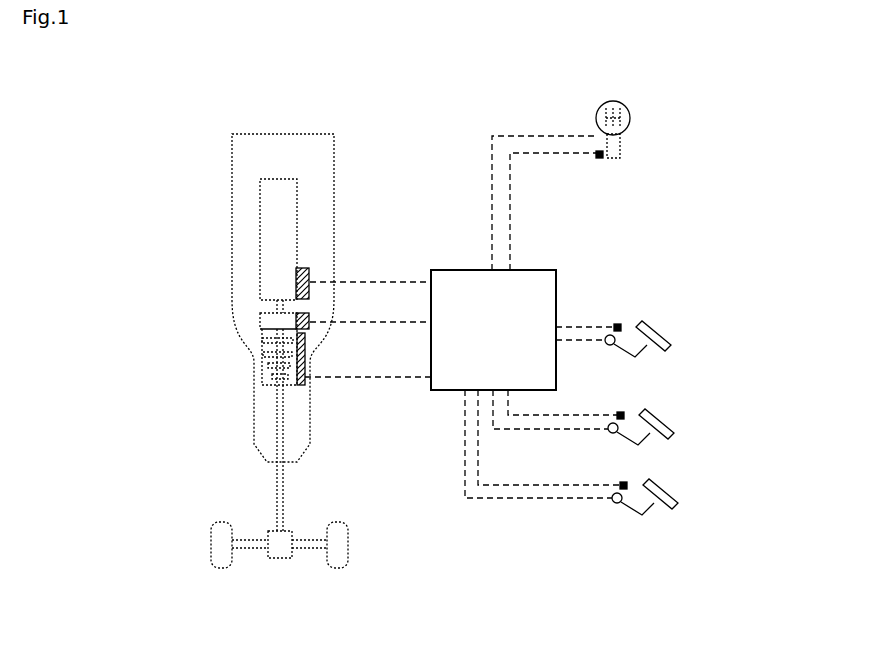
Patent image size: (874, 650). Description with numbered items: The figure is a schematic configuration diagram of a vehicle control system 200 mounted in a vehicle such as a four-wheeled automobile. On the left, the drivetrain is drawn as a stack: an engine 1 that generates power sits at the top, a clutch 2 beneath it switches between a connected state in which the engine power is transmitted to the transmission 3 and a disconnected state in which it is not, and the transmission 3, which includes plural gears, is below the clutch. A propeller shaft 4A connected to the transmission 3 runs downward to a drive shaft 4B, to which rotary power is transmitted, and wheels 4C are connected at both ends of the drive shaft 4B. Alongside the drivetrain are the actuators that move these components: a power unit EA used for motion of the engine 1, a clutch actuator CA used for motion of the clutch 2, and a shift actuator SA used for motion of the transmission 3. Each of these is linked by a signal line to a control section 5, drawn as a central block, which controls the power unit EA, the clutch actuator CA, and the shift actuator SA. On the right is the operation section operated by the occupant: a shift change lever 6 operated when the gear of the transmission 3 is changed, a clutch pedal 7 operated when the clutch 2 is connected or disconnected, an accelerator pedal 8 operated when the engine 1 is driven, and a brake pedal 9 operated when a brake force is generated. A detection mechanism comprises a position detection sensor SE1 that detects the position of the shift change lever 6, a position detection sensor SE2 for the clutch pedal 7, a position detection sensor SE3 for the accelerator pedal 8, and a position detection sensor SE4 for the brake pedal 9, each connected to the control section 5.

The vehicle control system 200 is at (757, 145).
The engine 1 is at (262, 241).
The clutch 2 is at (246, 337).
The transmission 3 is at (262, 385).
The propeller shaft 4A is at (284, 470).
The drive shaft 4B is at (317, 548).
The wheels 4C is at (230, 568).
The control section 5 is at (556, 276).
The shift change lever 6 is at (630, 113).
The clutch pedal 7 is at (655, 321).
The accelerator pedal 8 is at (658, 410).
The brake pedal 9 is at (668, 488).
The power unit EA is at (307, 272).
The clutch actuator CA is at (309, 324).
The shift actuator SA is at (305, 378).
The position detection sensor SE1 is at (600, 158).
The position detection sensor SE2 is at (616, 324).
The position detection sensor SE3 is at (620, 412).
The position detection sensor SE4 is at (623, 482).